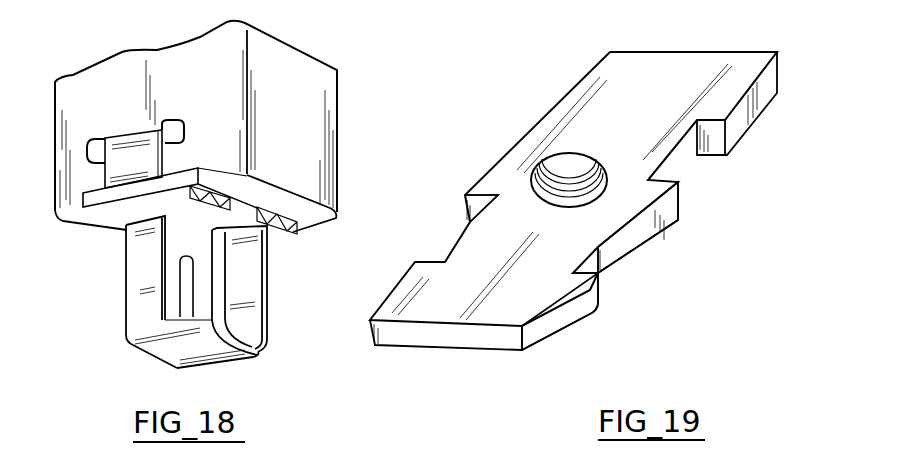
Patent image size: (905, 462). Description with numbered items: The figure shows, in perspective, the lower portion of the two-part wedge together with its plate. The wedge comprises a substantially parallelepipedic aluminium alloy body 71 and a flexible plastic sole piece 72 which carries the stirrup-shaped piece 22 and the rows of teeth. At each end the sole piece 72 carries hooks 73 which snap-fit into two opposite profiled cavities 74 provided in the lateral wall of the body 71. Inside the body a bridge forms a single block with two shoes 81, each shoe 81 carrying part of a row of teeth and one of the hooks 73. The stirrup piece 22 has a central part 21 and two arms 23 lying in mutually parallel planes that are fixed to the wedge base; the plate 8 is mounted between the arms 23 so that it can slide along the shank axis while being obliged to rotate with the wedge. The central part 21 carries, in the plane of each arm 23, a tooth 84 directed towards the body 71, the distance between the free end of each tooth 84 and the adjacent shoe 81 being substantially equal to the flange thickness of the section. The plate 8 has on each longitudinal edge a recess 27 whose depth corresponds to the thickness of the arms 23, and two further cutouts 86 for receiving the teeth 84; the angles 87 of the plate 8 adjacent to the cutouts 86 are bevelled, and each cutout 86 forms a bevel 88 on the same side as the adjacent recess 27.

In FIG. 19, the plate 8 is at (491, 139).
In FIG. 18, the central part 21 is at (163, 352).
In FIG. 18, the stirrup-shaped piece 22 is at (214, 305).
In FIG. 18, the arms 23 is at (135, 300).
In FIG. 19, the recess 27 is at (435, 260).
In FIG. 18, the body 71 is at (312, 103).
In FIG. 18, the sole piece 72 is at (84, 183).
In FIG. 18, the hooks 73 is at (135, 157).
In FIG. 18, the profiled cavities 74 is at (180, 133).
In FIG. 18, the shoes 81 is at (118, 213).
In FIG. 18, the tooth 84 is at (185, 278).
In FIG. 19, the cutouts 86 is at (530, 130).
In FIG. 19, the angles 87 is at (557, 322).
In FIG. 19, the bevel 88 is at (647, 230).